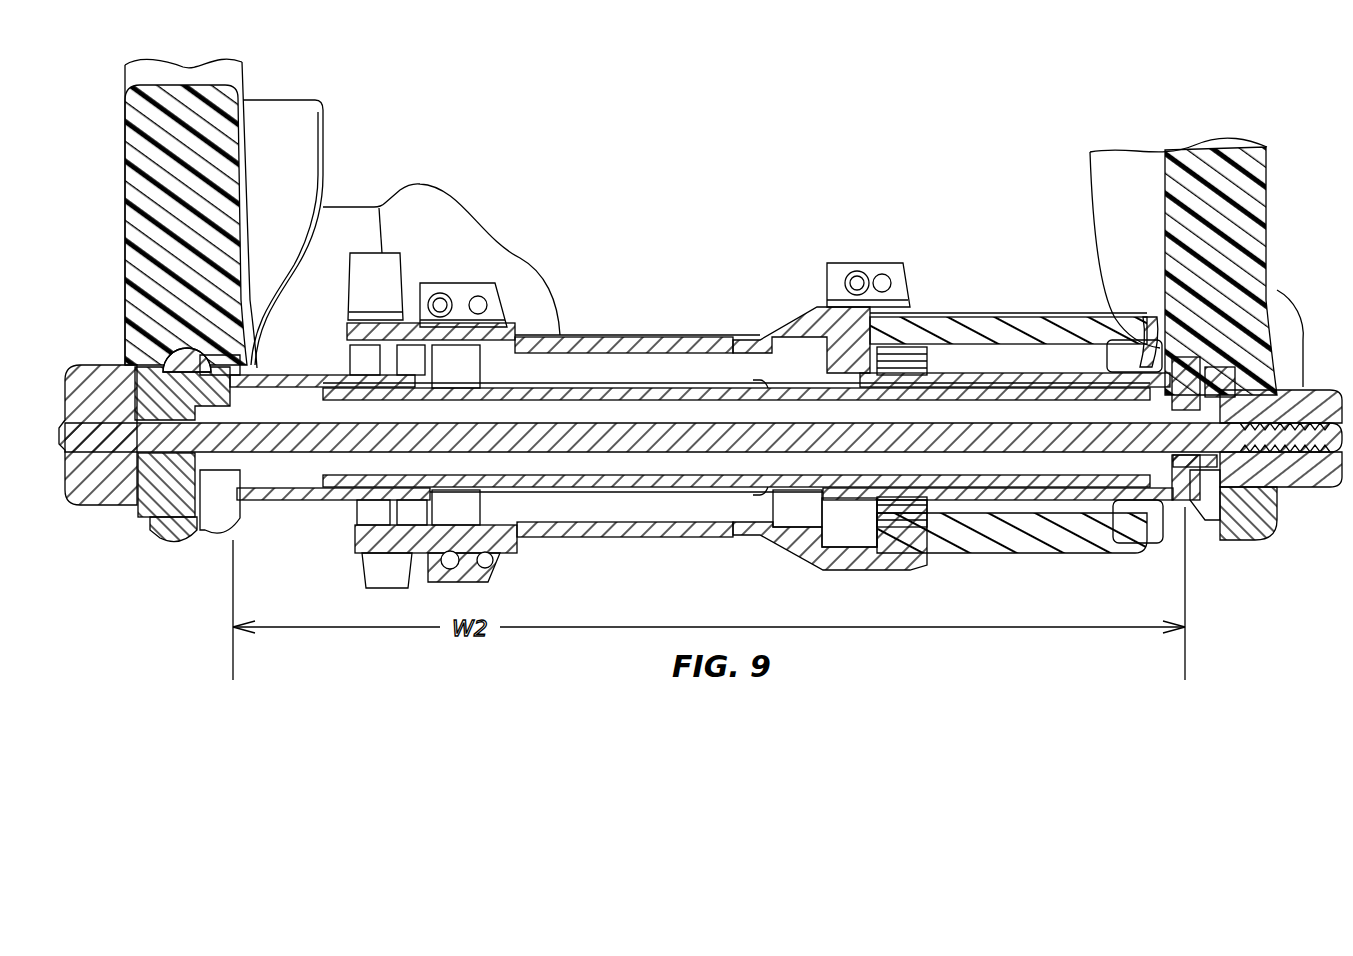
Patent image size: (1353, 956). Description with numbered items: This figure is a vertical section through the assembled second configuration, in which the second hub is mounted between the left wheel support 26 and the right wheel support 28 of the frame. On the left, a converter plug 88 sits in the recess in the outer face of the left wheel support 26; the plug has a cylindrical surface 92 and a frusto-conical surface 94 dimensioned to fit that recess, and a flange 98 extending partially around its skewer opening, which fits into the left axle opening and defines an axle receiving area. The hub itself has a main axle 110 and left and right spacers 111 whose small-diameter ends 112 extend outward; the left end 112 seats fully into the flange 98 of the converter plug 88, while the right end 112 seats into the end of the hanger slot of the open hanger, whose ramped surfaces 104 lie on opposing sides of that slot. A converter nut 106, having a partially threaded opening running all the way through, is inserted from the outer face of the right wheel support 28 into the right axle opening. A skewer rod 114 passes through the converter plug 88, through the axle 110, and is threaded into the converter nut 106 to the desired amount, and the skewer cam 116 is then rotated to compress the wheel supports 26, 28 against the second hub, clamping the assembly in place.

The left wheel support 26 is at (130, 300).
The right wheel support 28 is at (1262, 280).
The converter plug 88 is at (150, 483).
The cylindrical surface 92 is at (165, 513).
The frusto-conical surface 94 is at (195, 368).
The flange 98 is at (130, 318).
The ramped surfaces 104 is at (1212, 478).
The converter nut 106 is at (1318, 490).
The main axle 110 is at (647, 390).
The left and right spacers 111 is at (340, 505).
The small-diameter ends 112 is at (215, 513).
The skewer rod 114 is at (565, 422).
The skewer cam 116 is at (98, 505).